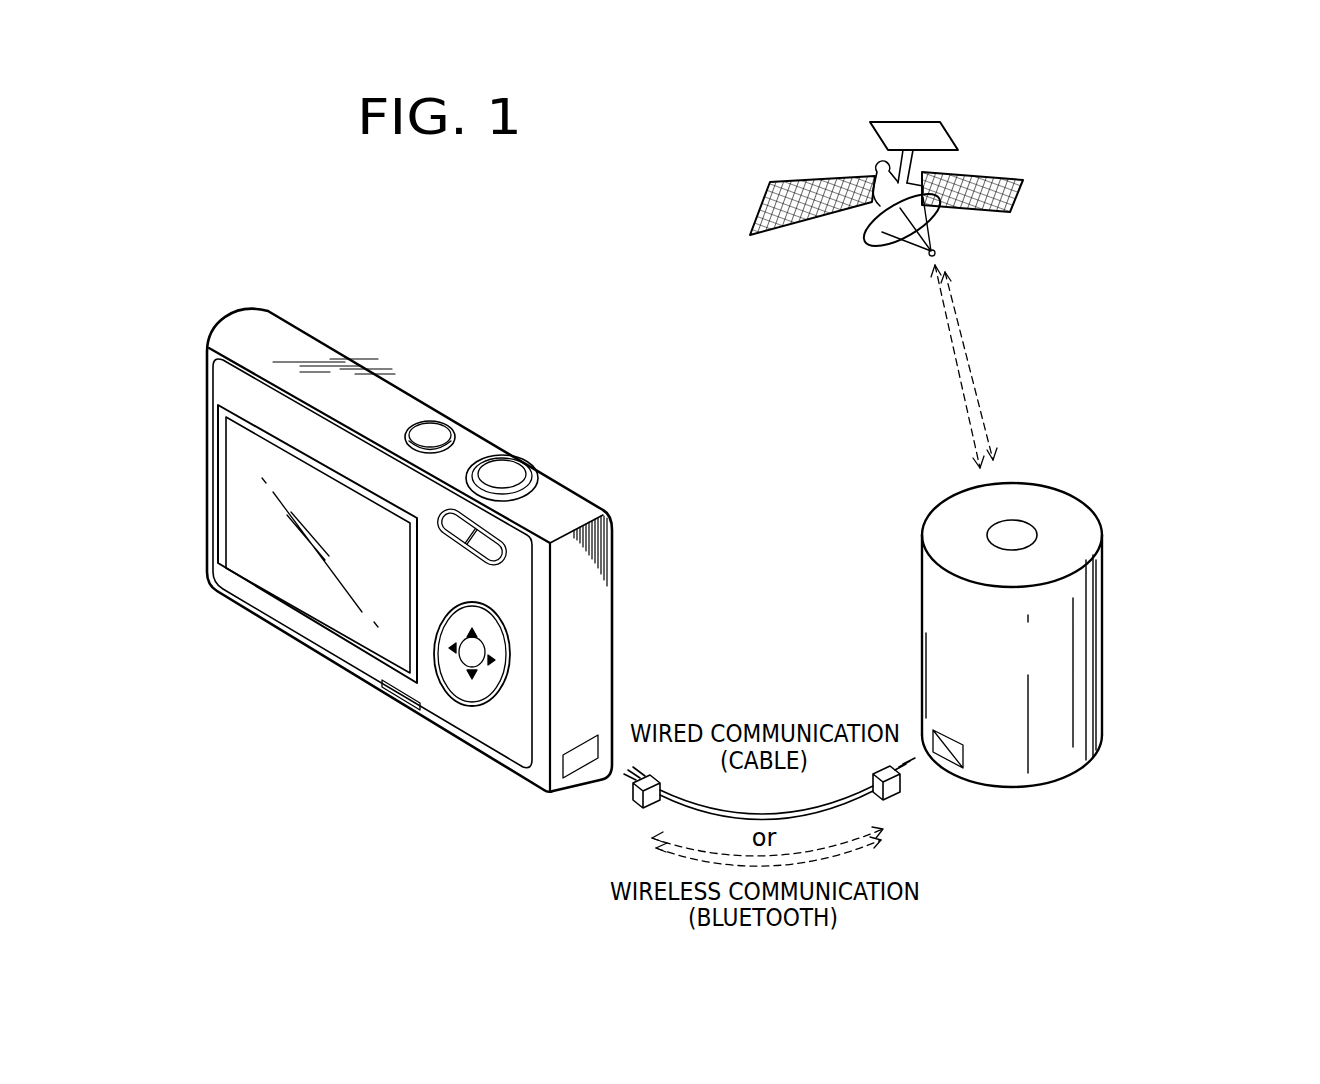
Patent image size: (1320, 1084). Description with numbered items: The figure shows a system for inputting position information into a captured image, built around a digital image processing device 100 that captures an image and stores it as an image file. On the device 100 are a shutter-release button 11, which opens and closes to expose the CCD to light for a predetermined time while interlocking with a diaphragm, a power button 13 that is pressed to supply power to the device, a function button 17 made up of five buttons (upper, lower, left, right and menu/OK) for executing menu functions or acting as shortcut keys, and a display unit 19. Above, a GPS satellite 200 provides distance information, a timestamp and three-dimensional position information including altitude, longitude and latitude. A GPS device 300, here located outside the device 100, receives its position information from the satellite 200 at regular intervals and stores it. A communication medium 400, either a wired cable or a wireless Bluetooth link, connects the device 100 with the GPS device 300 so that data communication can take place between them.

The digital image processing device 100 is at (235, 320).
The shutter-release button 11 is at (510, 472).
The power button 13 is at (433, 432).
The function button 17 is at (465, 697).
The display unit 19 is at (317, 620).
The GPS satellite 200 is at (952, 135).
The GPS device 300 is at (1090, 642).
The communication medium 400 is at (895, 815).